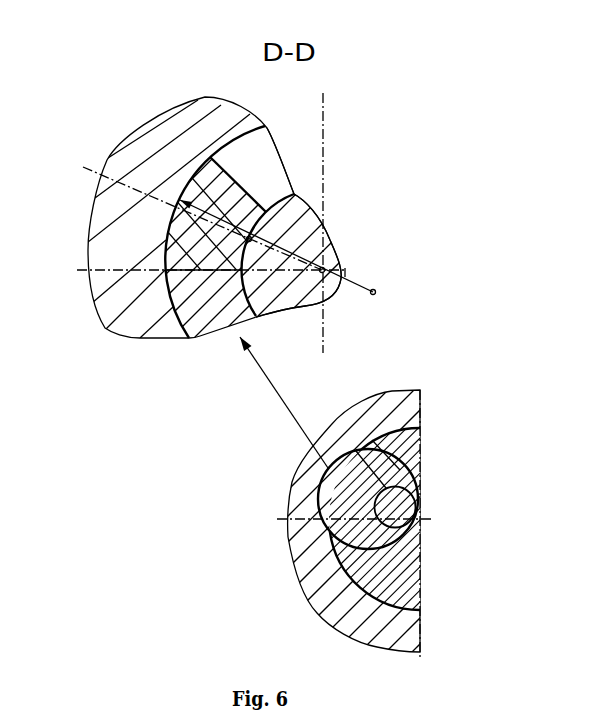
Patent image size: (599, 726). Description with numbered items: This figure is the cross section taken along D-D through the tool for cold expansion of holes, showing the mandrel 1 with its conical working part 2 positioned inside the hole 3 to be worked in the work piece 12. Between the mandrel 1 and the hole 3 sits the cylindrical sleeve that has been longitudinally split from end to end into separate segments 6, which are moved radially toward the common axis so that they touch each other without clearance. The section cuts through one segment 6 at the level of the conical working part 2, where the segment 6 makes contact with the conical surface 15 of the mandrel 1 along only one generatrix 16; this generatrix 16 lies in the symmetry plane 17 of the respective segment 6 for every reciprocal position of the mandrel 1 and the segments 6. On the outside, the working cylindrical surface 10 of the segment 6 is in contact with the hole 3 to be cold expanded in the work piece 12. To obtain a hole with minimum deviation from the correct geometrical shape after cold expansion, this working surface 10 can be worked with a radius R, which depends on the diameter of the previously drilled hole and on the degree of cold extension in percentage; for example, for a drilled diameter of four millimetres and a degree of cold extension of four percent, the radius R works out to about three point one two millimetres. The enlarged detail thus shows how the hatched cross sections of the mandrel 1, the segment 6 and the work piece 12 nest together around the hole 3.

The mandrel 1 is at (407, 542).
The conical working part 2 is at (307, 227).
The hole to be worked 3 is at (166, 234).
The segment 6 is at (165, 271).
The working surface 10 is at (185, 253).
The work piece 12 is at (207, 113).
The conical surface 15 is at (288, 192).
The generatrix 16 is at (250, 242).
The symmetry plane 17 is at (232, 232).